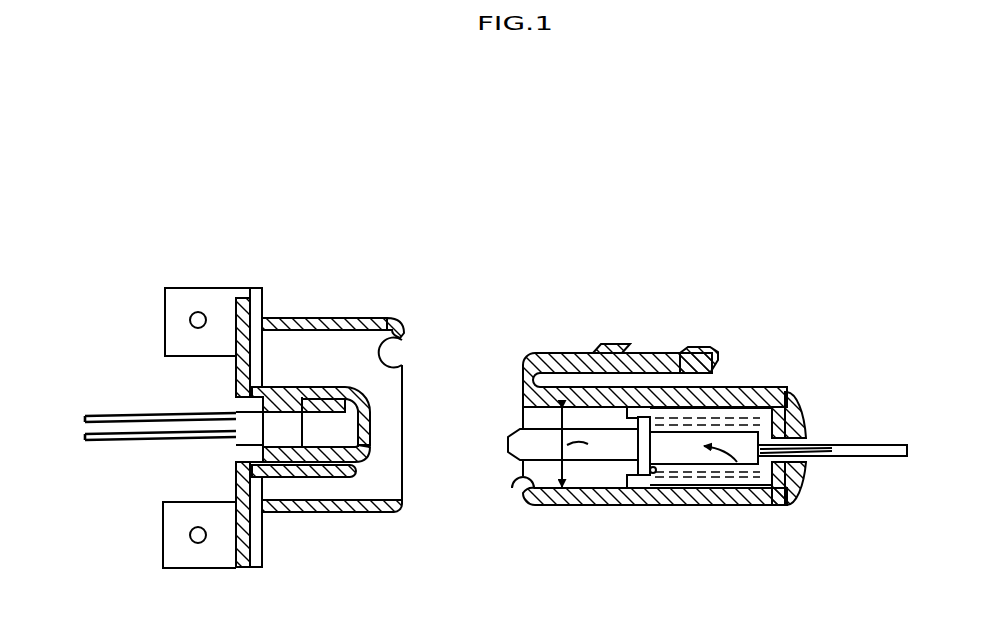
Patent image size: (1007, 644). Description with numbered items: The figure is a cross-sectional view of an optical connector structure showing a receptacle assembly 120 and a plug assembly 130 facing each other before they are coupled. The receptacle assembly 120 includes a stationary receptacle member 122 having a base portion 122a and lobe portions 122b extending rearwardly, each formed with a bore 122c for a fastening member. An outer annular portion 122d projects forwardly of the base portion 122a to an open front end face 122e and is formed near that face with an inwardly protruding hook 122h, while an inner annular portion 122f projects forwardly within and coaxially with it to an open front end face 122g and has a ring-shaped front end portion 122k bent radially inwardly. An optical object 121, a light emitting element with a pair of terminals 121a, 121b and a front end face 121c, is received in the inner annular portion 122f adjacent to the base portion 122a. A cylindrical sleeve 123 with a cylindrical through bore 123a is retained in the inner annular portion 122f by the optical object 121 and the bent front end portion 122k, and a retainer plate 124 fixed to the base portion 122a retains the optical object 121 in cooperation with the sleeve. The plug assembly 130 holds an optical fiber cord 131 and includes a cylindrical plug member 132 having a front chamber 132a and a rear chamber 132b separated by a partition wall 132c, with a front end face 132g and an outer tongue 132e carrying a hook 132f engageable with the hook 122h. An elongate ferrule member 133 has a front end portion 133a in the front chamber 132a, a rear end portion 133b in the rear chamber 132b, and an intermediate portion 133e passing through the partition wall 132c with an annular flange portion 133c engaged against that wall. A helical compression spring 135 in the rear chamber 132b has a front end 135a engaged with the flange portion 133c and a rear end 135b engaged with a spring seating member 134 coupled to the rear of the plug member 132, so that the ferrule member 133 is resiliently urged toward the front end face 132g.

The receptacle assembly 120 is at (287, 212).
The plug assembly 130 is at (722, 212).
The optical object 121 is at (277, 433).
The terminal 121a is at (90, 414).
The terminal 121b is at (90, 444).
The front end face of the optical object 121c is at (307, 382).
The receptacle member 122 is at (404, 316).
The base portion 122a is at (262, 547).
The lobe portion 122b is at (222, 273).
The bore 122c is at (190, 320).
The outer annular portion 122d is at (322, 318).
The open front end face 122e is at (410, 346).
The inner annular portion 122f is at (325, 512).
The open front end face 122g is at (371, 442).
The hook 122h is at (404, 367).
The ring-shaped front end portion 122k is at (332, 457).
The cylindrical sleeve 123 is at (378, 512).
The cylindrical through bore 123a is at (370, 418).
The retainer plate 124 is at (236, 568).
The optical fiber cord 131 is at (860, 446).
The plug member 132 is at (662, 506).
The front chamber 132a is at (523, 476).
The rear chamber 132b is at (733, 390).
The partition wall 132c is at (611, 506).
The outer tongue 132e is at (565, 349).
The hook 132f is at (617, 344).
The front end face of the plug member 132g is at (524, 374).
The ferrule member 133 is at (730, 506).
The front end portion 133a is at (522, 445).
The rear end portion 133b is at (815, 445).
The annular flange portion 133c is at (673, 348).
The intermediate portion 133e is at (553, 506).
The spring seating member 134 is at (805, 477).
The helical compression spring 135 is at (703, 506).
The front end of the spring 135a is at (653, 392).
The rear end of the spring 135b is at (790, 392).